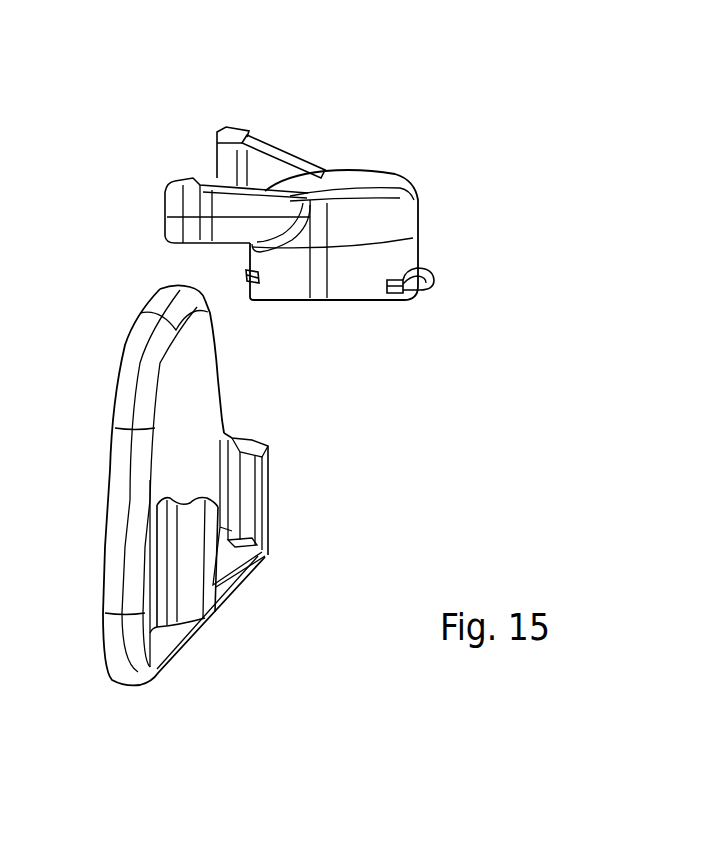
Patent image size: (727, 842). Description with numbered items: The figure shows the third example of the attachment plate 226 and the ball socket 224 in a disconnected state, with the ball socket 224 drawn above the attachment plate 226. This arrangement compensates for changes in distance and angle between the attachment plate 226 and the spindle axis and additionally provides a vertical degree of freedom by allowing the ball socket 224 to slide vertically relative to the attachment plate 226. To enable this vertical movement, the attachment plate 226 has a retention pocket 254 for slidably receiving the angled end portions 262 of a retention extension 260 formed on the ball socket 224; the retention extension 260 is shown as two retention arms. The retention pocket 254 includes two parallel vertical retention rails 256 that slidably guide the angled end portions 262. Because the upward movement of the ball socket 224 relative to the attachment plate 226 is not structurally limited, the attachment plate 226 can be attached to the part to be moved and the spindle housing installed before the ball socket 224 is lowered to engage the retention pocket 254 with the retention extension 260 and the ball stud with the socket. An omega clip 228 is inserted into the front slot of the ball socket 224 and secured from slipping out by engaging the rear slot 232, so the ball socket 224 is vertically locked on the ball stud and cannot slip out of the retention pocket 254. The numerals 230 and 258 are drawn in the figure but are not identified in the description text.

The ball socket 224 is at (393, 215).
The attachment plate 226 is at (190, 380).
The omega clip 228 is at (437, 274).
The retaining clip 230 is at (420, 293).
The rear slot 232 is at (248, 274).
The retention pocket 254 is at (228, 565).
The vertical retention rails 256 is at (252, 472).
The inner post 258 is at (258, 552).
The retention extension 260 is at (280, 155).
The angled end portions 262 is at (238, 133).